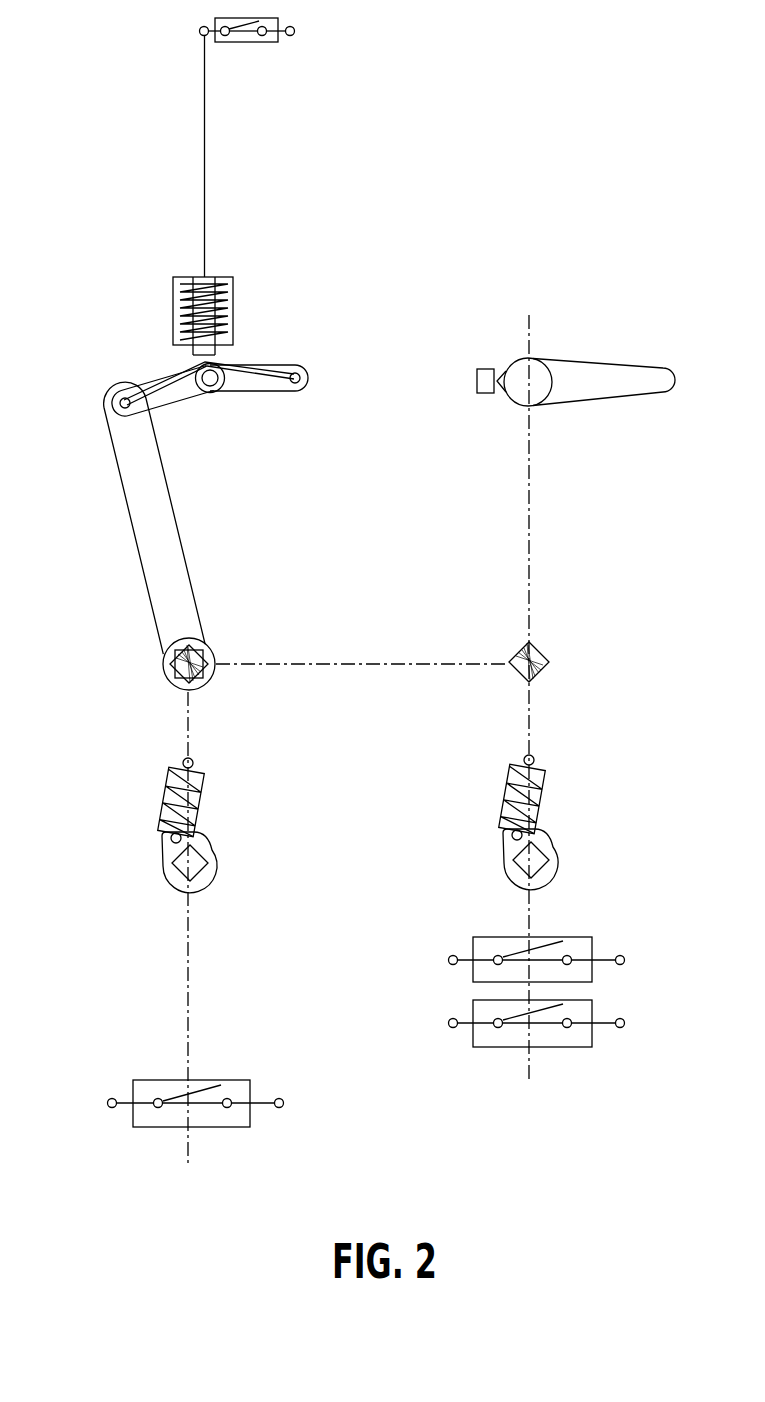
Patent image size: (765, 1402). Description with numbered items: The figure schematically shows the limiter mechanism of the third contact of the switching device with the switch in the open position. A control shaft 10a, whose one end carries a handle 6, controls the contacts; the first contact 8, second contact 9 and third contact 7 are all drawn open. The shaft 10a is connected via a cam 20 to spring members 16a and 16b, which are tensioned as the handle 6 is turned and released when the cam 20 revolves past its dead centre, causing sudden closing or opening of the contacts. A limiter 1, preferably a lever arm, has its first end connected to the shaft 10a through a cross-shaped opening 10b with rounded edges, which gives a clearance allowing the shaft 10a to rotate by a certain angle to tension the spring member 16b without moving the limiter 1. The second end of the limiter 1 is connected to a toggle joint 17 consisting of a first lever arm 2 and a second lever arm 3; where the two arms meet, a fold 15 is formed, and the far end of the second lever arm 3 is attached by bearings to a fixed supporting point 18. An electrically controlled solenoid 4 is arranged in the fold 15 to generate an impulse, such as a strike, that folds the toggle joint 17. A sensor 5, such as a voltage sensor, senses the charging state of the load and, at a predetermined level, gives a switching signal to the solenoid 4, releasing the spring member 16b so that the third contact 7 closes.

The limiter 1 is at (140, 537).
The first lever arm 2 is at (173, 398).
The second lever arm 3 is at (258, 386).
The solenoid 4 is at (175, 300).
The sensor 5 is at (255, 42).
The handle 6 is at (598, 387).
The third contact 7 is at (150, 1088).
The first contact 8 is at (578, 938).
The second contact 9 is at (578, 1038).
The control shaft 10a is at (172, 660).
The opening 10b is at (176, 685).
The fold 15 is at (219, 366).
The spring member 16a is at (545, 775).
The spring member 16b is at (201, 778).
The toggle joint 17 is at (173, 364).
The fixed supporting point 18 is at (300, 378).
The cam 20 is at (218, 857).